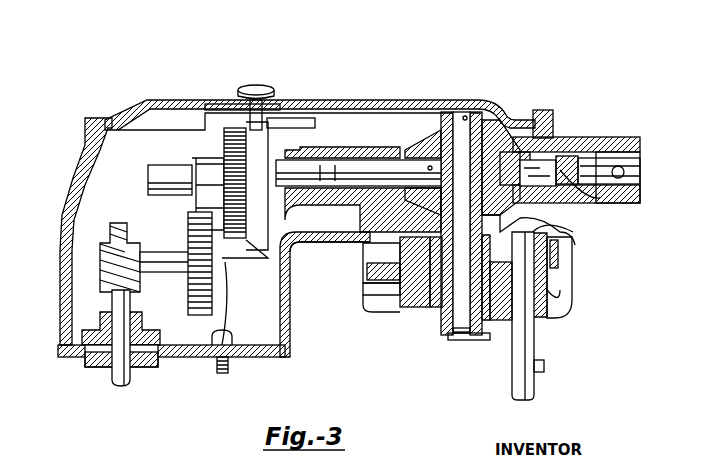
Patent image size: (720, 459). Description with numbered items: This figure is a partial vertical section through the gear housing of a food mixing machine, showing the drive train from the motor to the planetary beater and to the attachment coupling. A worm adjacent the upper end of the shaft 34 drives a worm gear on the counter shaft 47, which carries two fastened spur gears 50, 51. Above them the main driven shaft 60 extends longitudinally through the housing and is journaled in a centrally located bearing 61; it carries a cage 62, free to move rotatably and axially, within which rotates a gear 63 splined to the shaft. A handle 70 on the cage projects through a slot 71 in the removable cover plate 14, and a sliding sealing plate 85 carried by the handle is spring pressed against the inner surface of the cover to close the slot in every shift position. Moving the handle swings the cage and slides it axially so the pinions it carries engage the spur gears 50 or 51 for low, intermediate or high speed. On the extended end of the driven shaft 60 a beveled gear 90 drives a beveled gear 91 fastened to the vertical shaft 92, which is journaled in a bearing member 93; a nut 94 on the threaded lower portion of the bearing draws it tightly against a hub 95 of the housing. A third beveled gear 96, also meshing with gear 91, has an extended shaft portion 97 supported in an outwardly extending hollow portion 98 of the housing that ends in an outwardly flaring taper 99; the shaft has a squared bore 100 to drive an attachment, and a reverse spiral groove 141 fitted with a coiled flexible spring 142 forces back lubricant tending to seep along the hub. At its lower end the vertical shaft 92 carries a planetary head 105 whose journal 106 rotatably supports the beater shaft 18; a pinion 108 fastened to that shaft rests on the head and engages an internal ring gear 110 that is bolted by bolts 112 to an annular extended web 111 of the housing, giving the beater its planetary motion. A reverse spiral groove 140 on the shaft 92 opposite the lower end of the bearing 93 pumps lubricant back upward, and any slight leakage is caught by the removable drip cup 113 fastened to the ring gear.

The cover plate 14 is at (378, 98).
The planetary shaft 18 is at (522, 338).
The shaft 34 is at (118, 372).
The counter shaft 47 is at (157, 260).
The spur gear 50 is at (190, 316).
The spur gear 51 is at (232, 375).
The main driven shaft 60 is at (163, 175).
The bearing 61 is at (300, 245).
The cage 62 is at (196, 160).
The gear 63 is at (234, 130).
The handle 70 is at (258, 82).
The slot 71 is at (214, 104).
The sliding sealing plate 85 is at (300, 128).
The beveled gear 90 is at (412, 150).
The beveled gear 91 is at (452, 118).
The vertical shaft 92 is at (470, 120).
The bearing member 93 is at (535, 128).
The nut 94 is at (405, 310).
The hub 95 is at (395, 298).
The third beveled gear 96 is at (520, 160).
The shaft portion 97 is at (540, 150).
The hollow portion 98 is at (580, 160).
The outwardly flaring taper 99 is at (605, 165).
The squared bore 100 is at (578, 172).
The planetary head 105 is at (450, 322).
The journal 106 is at (498, 325).
The pinion 108 is at (575, 292).
The internal ring gear 110 is at (362, 290).
The annular extended web 111 is at (380, 280).
The bolts 112 is at (560, 250).
The drip cup 113 is at (365, 308).
The reverse spiral groove 140 is at (440, 328).
The reverse spiral groove 141 is at (565, 225).
The coiled flexible spring 142 is at (588, 158).